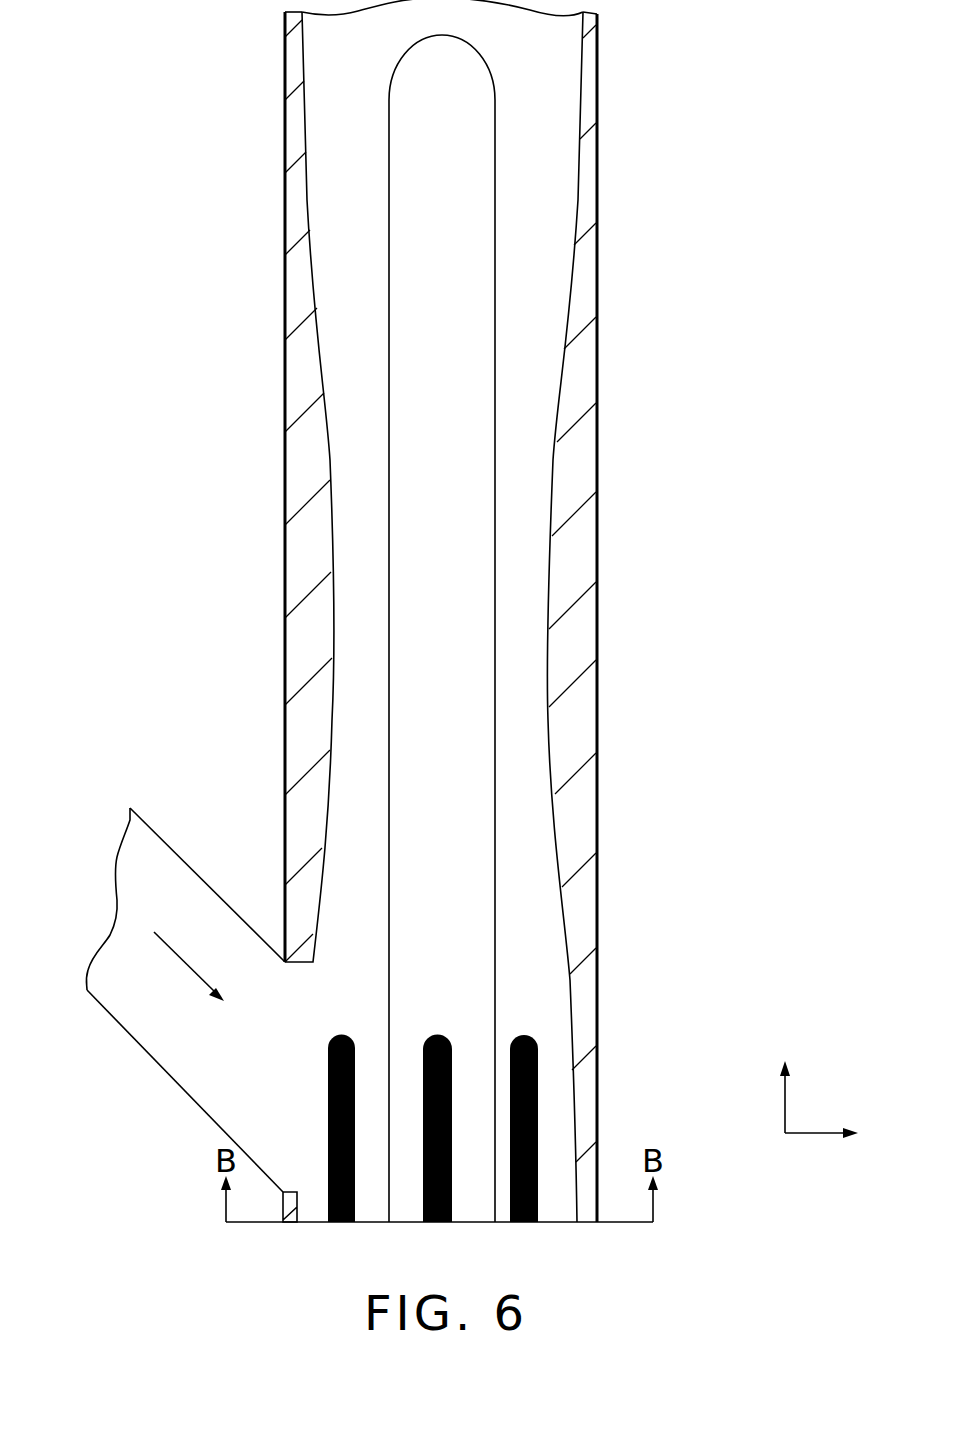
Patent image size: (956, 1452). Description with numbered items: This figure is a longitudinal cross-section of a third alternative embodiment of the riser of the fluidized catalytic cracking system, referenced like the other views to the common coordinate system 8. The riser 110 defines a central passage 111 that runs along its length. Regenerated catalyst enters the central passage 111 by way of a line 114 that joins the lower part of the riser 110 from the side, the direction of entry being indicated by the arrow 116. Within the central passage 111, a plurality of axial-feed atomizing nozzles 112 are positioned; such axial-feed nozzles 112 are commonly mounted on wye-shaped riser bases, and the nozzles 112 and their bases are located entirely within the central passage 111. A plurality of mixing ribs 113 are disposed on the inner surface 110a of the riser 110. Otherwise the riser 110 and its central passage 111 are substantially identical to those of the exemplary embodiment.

The riser 110 is at (608, 91).
The inner surface 110a is at (318, 92).
The central passage 111 is at (552, 184).
The axial-feed atomizing nozzles 112 is at (424, 1195).
The mixing ribs 113 is at (297, 361).
The line 114 is at (122, 1030).
The arrow 116 is at (181, 958).
The coordinate system 8 is at (800, 1134).